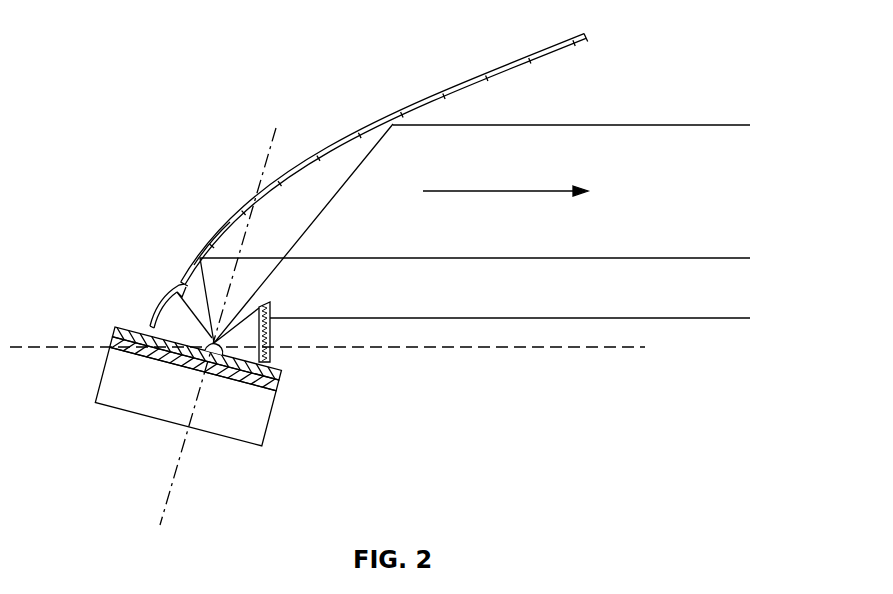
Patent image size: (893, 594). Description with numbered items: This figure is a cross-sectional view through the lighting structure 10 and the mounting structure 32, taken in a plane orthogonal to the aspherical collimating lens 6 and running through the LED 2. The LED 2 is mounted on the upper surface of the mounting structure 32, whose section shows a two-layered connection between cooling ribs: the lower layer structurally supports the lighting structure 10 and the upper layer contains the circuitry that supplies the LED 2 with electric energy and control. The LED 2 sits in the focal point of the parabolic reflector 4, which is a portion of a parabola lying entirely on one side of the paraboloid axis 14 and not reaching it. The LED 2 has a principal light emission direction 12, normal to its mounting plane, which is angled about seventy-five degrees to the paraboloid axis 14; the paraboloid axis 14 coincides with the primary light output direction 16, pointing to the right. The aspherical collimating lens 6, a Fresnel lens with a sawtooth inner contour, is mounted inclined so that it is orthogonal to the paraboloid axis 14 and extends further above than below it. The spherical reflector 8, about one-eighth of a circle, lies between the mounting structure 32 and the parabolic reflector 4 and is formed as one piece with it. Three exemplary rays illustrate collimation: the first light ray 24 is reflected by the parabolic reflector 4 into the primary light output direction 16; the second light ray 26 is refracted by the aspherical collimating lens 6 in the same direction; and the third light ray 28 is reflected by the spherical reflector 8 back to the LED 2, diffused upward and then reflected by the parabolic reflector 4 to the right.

The LED 2 is at (208, 334).
The parabolic reflector 4 is at (531, 56).
The aspherical collimating lens 6 is at (272, 312).
The spherical reflector 8 is at (163, 308).
The lighting structure 10 is at (183, 254).
The principal light emission direction 12 is at (268, 152).
The paraboloid axis 14 is at (623, 349).
The primary light output direction 16 is at (462, 190).
The first light ray 24 is at (713, 124).
The second light ray 26 is at (713, 317).
The third light ray 28 is at (713, 257).
The mounting structure 32 is at (123, 413).